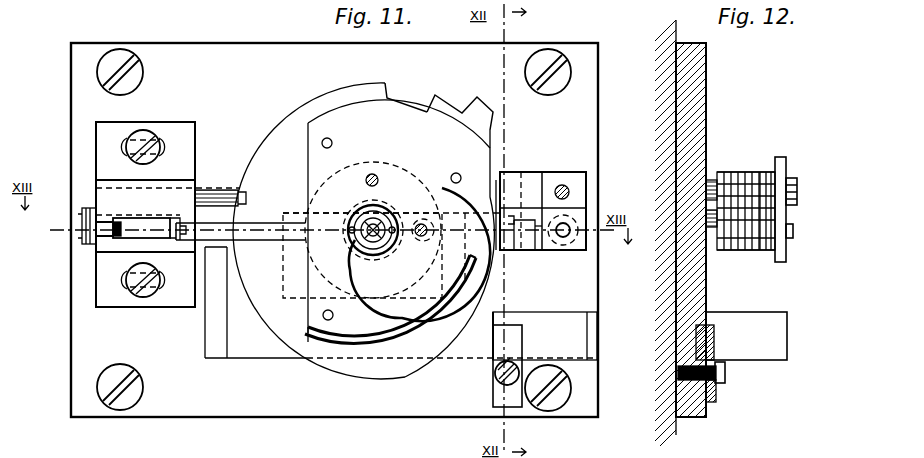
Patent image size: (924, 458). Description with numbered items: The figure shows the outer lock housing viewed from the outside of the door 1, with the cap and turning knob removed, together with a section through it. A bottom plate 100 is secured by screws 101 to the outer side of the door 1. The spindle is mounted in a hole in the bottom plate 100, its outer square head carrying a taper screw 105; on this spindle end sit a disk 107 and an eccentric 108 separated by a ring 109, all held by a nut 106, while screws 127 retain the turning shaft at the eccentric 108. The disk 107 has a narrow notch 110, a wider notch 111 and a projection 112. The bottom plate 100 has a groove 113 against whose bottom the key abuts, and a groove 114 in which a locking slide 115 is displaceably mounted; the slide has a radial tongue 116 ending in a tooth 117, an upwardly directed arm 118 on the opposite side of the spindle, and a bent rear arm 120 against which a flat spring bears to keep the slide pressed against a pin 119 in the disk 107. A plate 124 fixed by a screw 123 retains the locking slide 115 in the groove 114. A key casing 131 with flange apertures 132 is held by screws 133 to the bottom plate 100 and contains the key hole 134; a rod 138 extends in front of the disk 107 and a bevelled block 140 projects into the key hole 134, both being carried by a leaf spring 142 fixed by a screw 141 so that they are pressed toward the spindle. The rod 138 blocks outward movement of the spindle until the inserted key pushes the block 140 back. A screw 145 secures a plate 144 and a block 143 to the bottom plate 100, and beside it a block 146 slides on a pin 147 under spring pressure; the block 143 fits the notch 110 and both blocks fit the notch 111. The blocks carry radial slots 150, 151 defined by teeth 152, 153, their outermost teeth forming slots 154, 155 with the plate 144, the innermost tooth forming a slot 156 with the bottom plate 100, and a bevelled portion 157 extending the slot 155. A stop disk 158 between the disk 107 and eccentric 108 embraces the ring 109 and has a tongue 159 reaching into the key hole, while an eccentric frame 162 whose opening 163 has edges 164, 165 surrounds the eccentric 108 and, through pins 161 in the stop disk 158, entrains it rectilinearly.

In FIG. 12, the door 1 is at (676, 103).
In FIG. 11, the bottom plate 100 is at (157, 406).
In FIG. 12, the bottom plate 100 is at (676, 144).
In FIG. 11, the screws 101 is at (102, 72).
In FIG. 11, the taper screw 105 is at (362, 223).
In FIG. 11, the nut 106 is at (353, 241).
In FIG. 11, the disk 107 is at (296, 335).
In FIG. 11, the eccentric 108 is at (362, 183).
In FIG. 11, the ring 109 is at (362, 258).
In FIG. 11, the notch 110 is at (400, 102).
In FIG. 11, the notch 111 is at (508, 178).
In FIG. 11, the projection 112 is at (478, 114).
In FIG. 11, the groove 113 is at (80, 216).
In FIG. 11, the groove 114 is at (213, 350).
In FIG. 11, the locking slide 115 is at (250, 348).
In FIG. 11, the tongue 116 is at (210, 214).
In FIG. 11, the tooth 117 is at (181, 222).
In FIG. 11, the arm 118 is at (481, 288).
In FIG. 11, the pin 119 is at (454, 173).
In FIG. 11, the arm 120 is at (594, 353).
In FIG. 12, the arm 120 is at (770, 335).
In FIG. 11, the screw 123 is at (507, 384).
In FIG. 12, the screw 123 is at (726, 373).
In FIG. 11, the plate 124 is at (500, 347).
In FIG. 12, the plate 124 is at (716, 400).
In FIG. 11, the screws 127 is at (420, 221).
In FIG. 11, the key casing 131 is at (140, 200).
In FIG. 11, the apertures 132 is at (126, 149).
In FIG. 11, the screws 133 is at (126, 140).
In FIG. 11, the key hole 134 is at (122, 266).
In FIG. 11, the rod 138 is at (231, 212).
In FIG. 11, the bevelled block 140 is at (150, 230).
In FIG. 11, the screw 141 is at (96, 226).
In FIG. 11, the leaf spring 142 is at (96, 237).
In FIG. 11, the block 143 is at (556, 180).
In FIG. 12, the plate 144 is at (782, 165).
In FIG. 11, the screw 145 is at (570, 193).
In FIG. 11, the block 146 is at (577, 247).
In FIG. 11, the pin 147 is at (571, 236).
In FIG. 12, the slots 150 is at (752, 176).
In FIG. 12, the slots 151 is at (760, 252).
In FIG. 11, the teeth 152 is at (520, 184).
In FIG. 12, the teeth 152 is at (728, 180).
In FIG. 11, the teeth 153 is at (512, 238).
In FIG. 12, the teeth 153 is at (731, 252).
In FIG. 12, the slot 154 is at (775, 180).
In FIG. 12, the slot 155 is at (775, 219).
In FIG. 12, the slot 156 is at (712, 180).
In FIG. 11, the bevelled portion 157 is at (531, 241).
In FIG. 12, the bevelled portion 157 is at (776, 246).
In FIG. 11, the stop disk 158 is at (334, 343).
In FIG. 11, the tongue 159 is at (258, 233).
In FIG. 11, the pins 161 is at (321, 143).
In FIG. 11, the eccentric frame 162 is at (358, 330).
In FIG. 11, the opening 163 is at (400, 312).
In FIG. 11, the frame edge 164 is at (352, 267).
In FIG. 11, the frame edge 165 is at (456, 267).